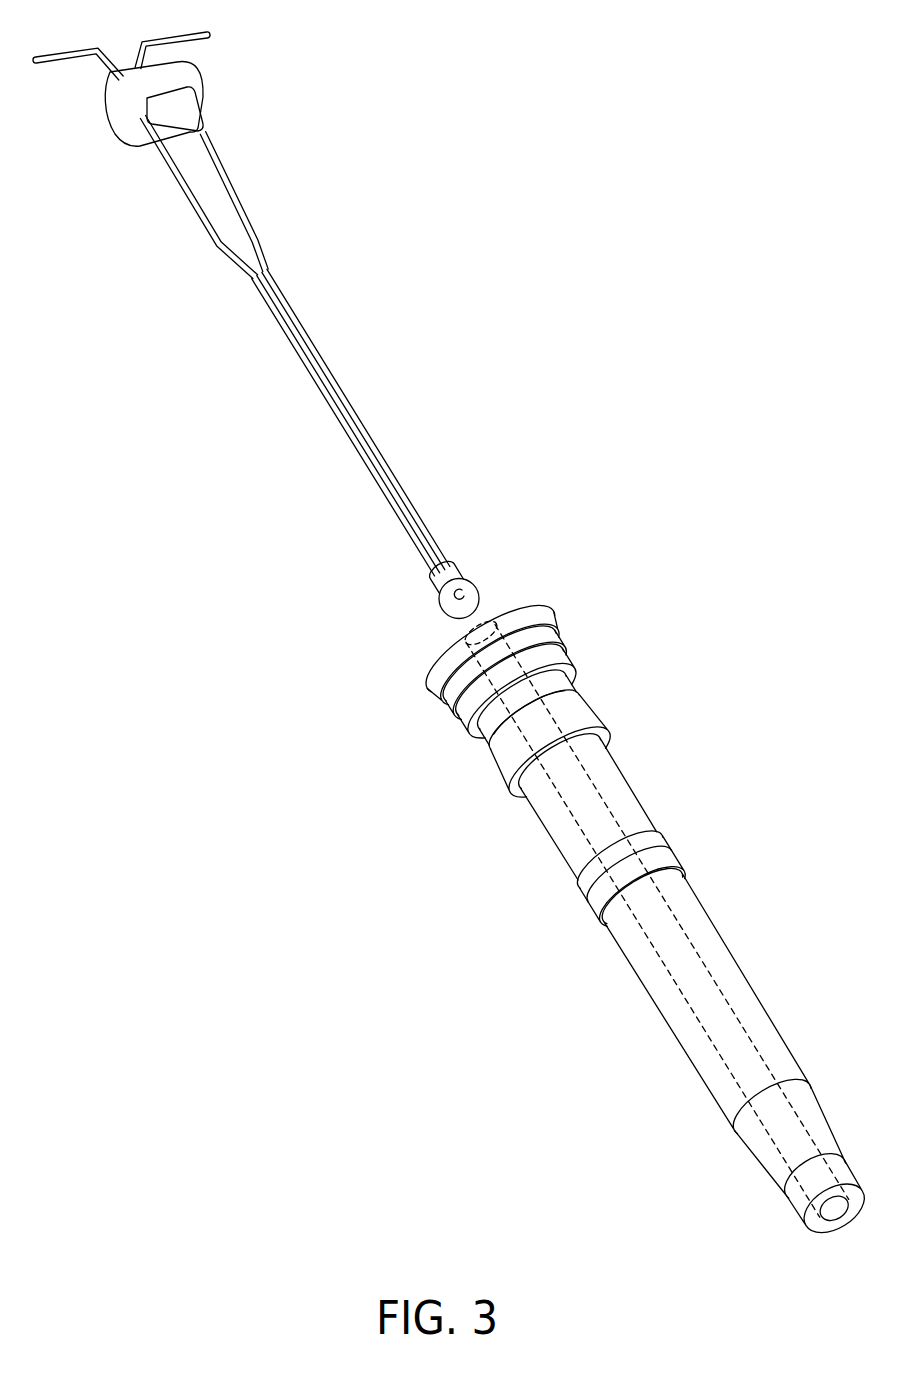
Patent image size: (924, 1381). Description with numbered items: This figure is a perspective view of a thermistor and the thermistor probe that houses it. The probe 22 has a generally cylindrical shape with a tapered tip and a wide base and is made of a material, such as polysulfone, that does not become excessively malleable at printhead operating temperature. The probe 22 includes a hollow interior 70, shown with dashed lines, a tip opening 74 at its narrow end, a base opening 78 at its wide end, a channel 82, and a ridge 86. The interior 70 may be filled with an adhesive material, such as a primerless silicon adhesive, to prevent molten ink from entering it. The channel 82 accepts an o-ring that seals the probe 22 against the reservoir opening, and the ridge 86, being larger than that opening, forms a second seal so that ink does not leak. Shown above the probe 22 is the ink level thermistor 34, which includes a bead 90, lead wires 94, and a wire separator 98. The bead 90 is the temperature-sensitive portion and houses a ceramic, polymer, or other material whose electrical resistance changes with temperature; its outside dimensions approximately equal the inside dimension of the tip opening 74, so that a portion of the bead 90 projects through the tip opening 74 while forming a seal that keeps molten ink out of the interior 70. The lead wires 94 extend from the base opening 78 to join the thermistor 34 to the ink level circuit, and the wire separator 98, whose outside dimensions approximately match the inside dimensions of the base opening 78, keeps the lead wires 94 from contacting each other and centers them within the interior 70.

The probe 22 is at (788, 917).
The ink level thermistor 34 is at (380, 319).
The hollow interior 70 is at (697, 980).
The tip opening 74 is at (823, 1217).
The base opening 78 is at (463, 632).
The channel 82 is at (560, 692).
The ridge 86 is at (437, 697).
The bead 90 is at (468, 590).
The lead wires 94 is at (267, 282).
The wire separator 98 is at (135, 78).